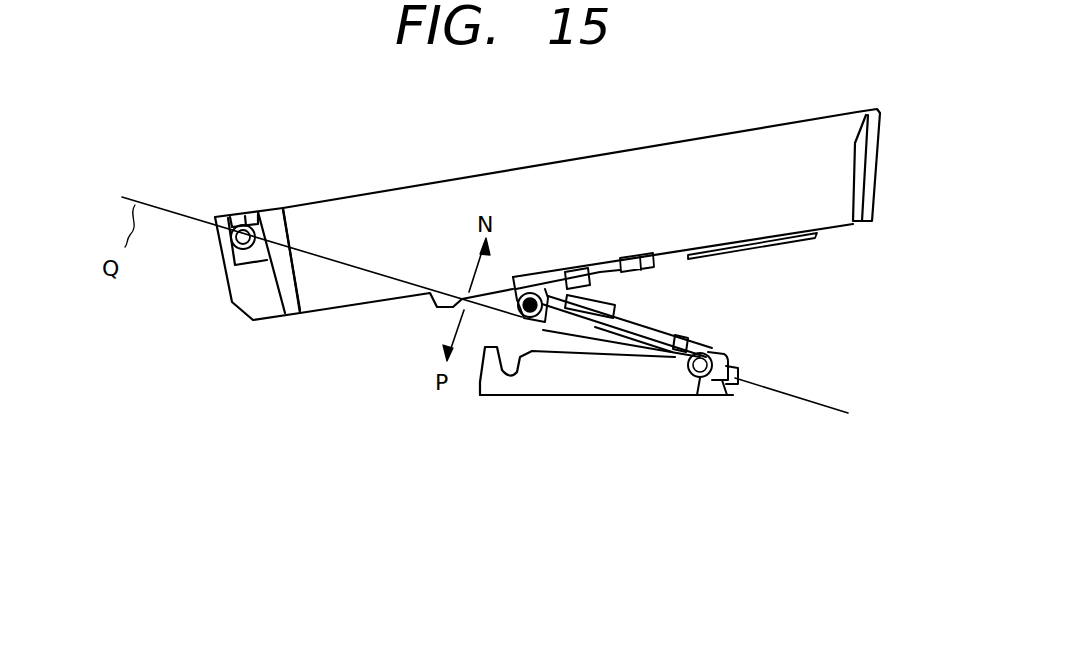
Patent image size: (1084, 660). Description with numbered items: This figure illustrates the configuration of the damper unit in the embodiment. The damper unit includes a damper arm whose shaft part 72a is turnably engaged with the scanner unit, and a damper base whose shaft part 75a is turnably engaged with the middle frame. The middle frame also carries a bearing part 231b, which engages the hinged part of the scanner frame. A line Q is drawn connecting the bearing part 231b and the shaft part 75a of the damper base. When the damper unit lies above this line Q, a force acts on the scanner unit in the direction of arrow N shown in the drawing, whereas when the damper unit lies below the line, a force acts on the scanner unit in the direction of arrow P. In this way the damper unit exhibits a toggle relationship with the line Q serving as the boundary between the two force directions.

The bearing part 231b is at (233, 247).
The shaft part of the damper arm 72a is at (522, 328).
The shaft part of the damper base 75a is at (695, 378).